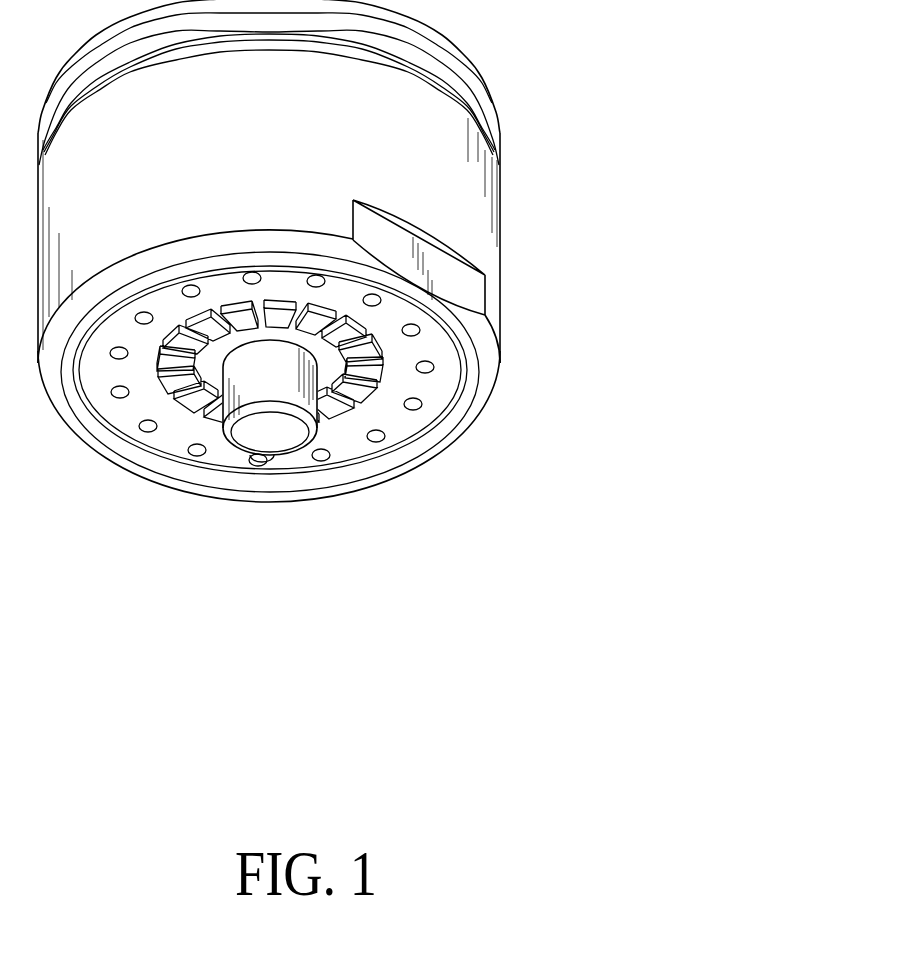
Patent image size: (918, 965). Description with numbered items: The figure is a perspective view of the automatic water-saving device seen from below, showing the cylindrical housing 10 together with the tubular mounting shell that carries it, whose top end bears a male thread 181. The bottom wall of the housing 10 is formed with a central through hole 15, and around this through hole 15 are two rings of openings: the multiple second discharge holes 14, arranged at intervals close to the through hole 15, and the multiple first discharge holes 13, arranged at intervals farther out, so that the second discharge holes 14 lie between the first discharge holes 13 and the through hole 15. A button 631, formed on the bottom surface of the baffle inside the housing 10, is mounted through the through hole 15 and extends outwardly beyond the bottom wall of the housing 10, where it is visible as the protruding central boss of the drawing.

The housing 10 is at (500, 203).
The male thread 181 is at (478, 72).
The first discharge holes 13 is at (420, 408).
The second discharge holes 14 is at (350, 412).
The through hole 15 is at (223, 383).
The button 631 is at (282, 447).